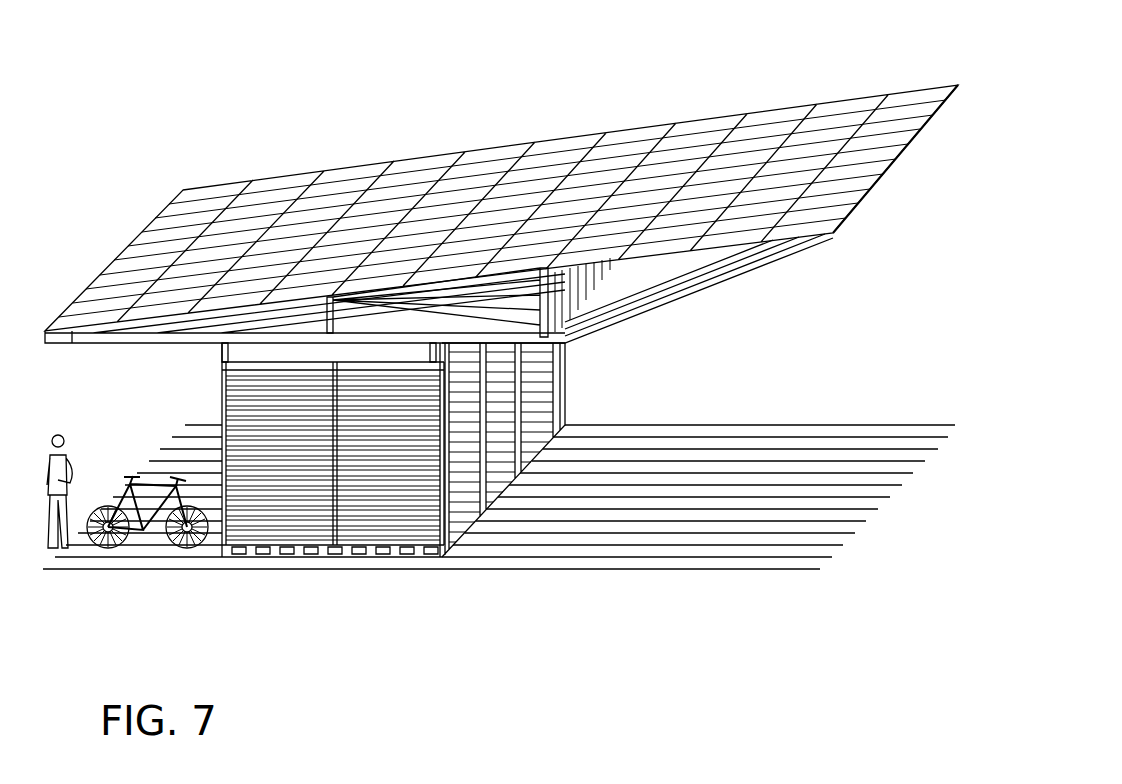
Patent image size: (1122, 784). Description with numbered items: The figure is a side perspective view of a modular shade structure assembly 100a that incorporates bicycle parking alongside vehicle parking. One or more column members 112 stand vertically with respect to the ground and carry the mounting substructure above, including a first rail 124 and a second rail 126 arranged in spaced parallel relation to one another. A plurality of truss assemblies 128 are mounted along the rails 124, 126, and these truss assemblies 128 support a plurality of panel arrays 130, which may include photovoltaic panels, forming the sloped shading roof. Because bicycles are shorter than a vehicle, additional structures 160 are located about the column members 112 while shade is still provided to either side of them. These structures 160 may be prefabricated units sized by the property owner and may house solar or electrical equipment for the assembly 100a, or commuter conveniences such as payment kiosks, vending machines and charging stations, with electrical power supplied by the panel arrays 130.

The modular shade structure assembly 100a is at (322, 41).
The panel array 130 is at (836, 106).
The truss assembly 128 is at (690, 284).
The second rail 126 is at (202, 352).
The first rail 124 is at (568, 364).
The column member 112 is at (328, 547).
The additional structure 160 is at (566, 426).